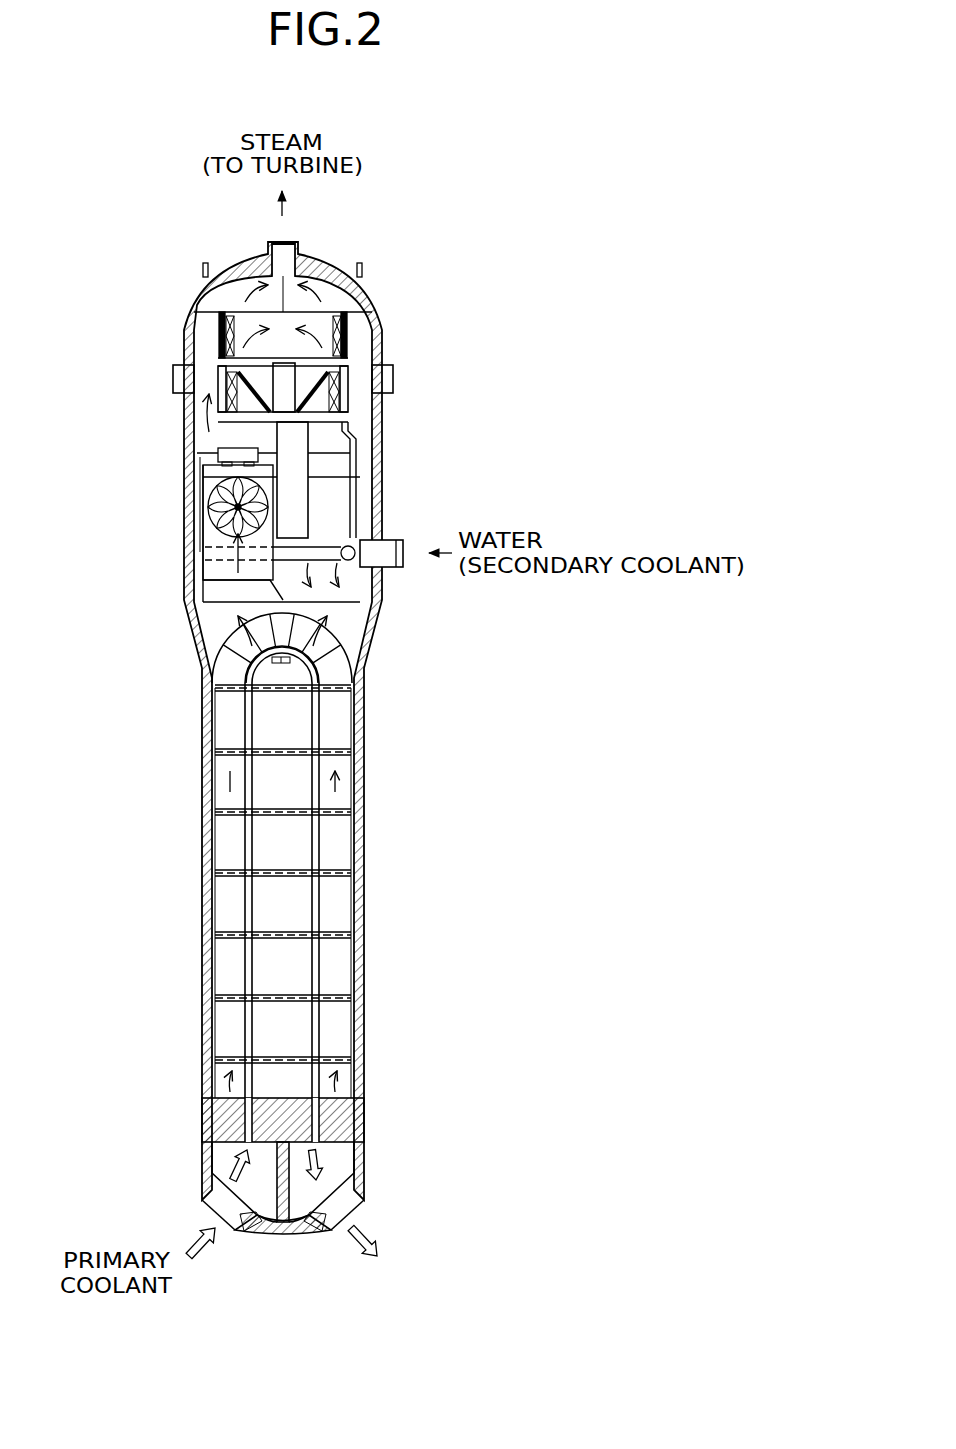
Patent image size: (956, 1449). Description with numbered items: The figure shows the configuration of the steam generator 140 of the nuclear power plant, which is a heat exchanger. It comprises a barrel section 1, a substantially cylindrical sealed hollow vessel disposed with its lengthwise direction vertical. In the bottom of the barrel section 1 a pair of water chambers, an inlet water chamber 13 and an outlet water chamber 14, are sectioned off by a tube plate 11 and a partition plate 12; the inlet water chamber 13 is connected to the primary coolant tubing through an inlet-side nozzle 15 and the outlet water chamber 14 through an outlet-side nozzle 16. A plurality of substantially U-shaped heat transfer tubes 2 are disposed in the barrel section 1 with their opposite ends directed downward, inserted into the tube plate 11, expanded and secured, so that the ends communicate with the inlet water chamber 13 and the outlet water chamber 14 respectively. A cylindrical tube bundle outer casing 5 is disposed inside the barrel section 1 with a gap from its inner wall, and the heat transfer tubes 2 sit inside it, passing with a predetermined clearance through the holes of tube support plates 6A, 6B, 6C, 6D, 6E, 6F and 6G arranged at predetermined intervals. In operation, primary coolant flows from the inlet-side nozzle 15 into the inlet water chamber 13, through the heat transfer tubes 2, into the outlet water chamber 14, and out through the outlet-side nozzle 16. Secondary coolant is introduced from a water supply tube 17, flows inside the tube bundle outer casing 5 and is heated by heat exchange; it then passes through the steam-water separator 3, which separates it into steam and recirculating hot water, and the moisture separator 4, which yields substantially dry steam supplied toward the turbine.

The steam generator 140 is at (534, 157).
The barrel section 1 is at (186, 420).
The heat transfer tubes 2 is at (242, 845).
The steam-water separator 3 is at (205, 496).
The moisture separator 4 is at (325, 345).
The tube bundle outer casing 5 is at (355, 632).
The tube support plate 6A is at (334, 1061).
The tube support plate 6B is at (334, 999).
The tube support plate 6C is at (334, 936).
The tube support plate 6D is at (334, 874).
The tube support plate 6E is at (334, 813).
The tube support plate 6F is at (334, 753).
The tube support plate 6G is at (334, 689).
The tube plate 11 is at (362, 1116).
The partition plate 12 is at (283, 1223).
The inlet water chamber 13 is at (222, 1162).
The outlet water chamber 14 is at (340, 1162).
The inlet-side nozzle 15 is at (230, 1231).
The outlet-side nozzle 16 is at (340, 1232).
The water supply tube 17 is at (403, 541).